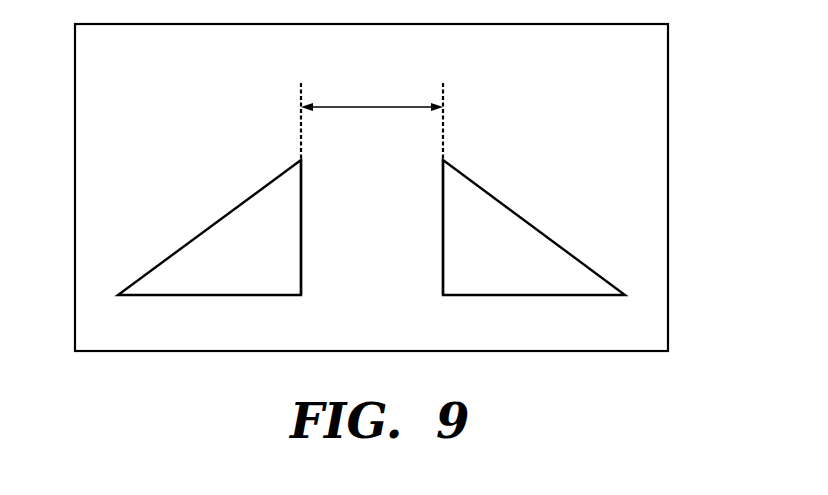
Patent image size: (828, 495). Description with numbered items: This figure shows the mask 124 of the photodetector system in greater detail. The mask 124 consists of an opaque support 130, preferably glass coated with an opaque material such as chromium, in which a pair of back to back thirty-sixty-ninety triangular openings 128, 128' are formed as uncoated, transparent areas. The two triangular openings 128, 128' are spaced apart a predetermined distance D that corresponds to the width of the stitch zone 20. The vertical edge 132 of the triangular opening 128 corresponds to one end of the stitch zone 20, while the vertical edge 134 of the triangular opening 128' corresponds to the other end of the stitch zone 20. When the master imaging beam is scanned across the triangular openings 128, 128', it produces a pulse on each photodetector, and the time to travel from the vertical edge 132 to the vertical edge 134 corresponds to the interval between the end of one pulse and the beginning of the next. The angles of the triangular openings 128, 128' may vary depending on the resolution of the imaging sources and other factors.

The mask 124 is at (684, 95).
The opaque support 130 is at (652, 309).
The triangular opening 128 is at (209, 249).
The triangular opening 128' is at (534, 249).
The vertical edge 132 is at (301, 224).
The vertical edge 134 is at (443, 197).
The stitch zone 20 is at (301, 73).